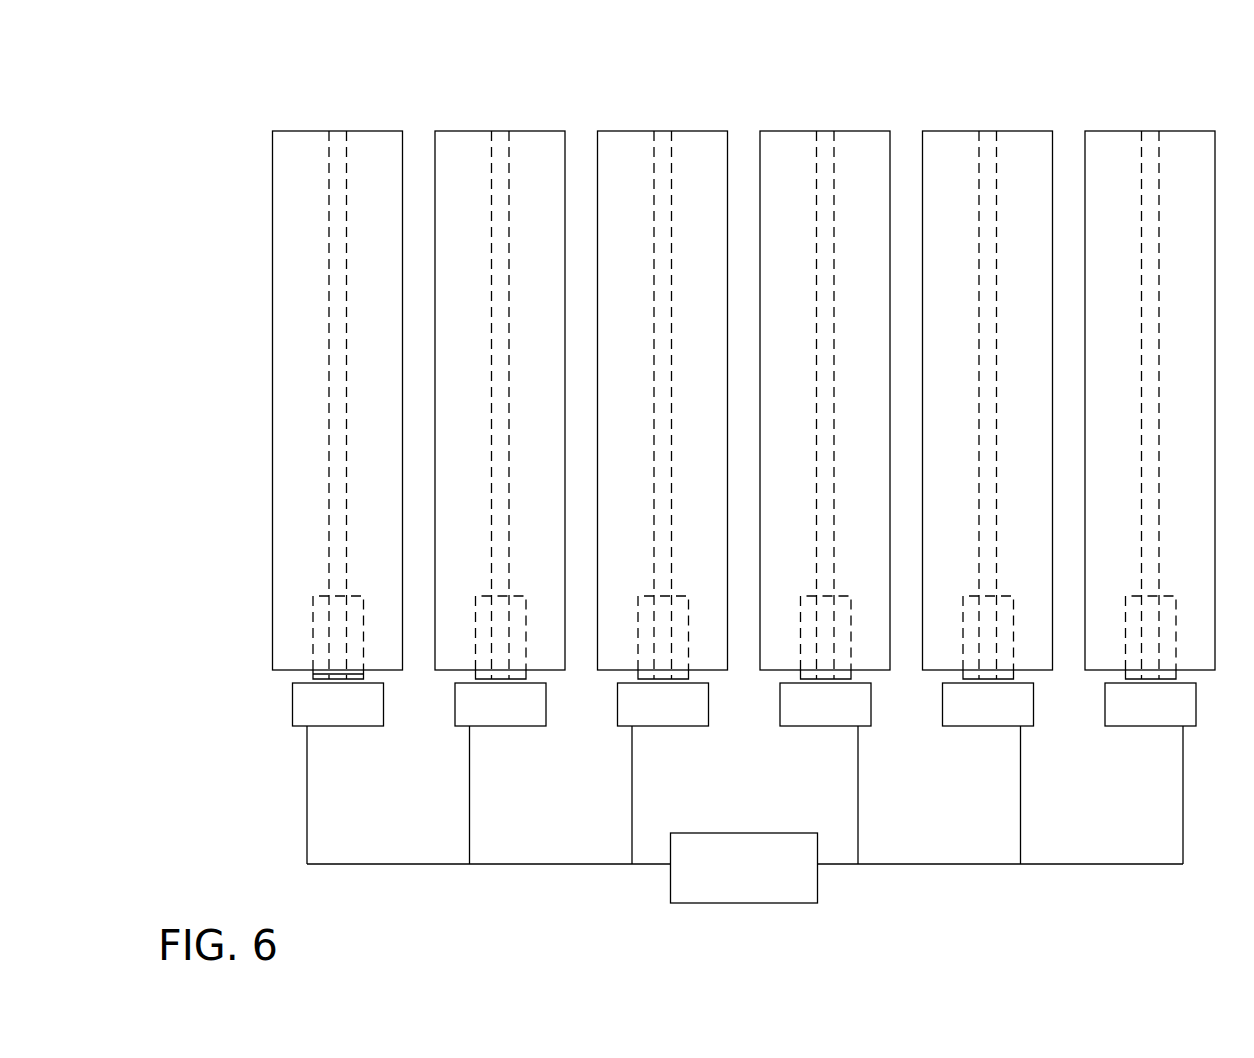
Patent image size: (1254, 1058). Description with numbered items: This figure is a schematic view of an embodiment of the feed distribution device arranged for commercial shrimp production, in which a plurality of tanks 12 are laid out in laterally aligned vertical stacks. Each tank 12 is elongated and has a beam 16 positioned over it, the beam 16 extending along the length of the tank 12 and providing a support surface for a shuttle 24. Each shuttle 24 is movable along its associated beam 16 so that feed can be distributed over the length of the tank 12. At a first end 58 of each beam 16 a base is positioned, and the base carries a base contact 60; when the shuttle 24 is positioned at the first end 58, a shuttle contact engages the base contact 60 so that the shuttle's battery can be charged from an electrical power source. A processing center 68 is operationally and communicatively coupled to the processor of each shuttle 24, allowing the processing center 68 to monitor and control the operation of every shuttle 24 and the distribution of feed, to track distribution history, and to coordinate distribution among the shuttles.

The tank 12 is at (302, 131).
The beam 16 is at (342, 168).
The shuttle 24 is at (352, 640).
The first end 58 is at (318, 680).
The base contact 60 is at (336, 712).
The processing center 68 is at (807, 888).